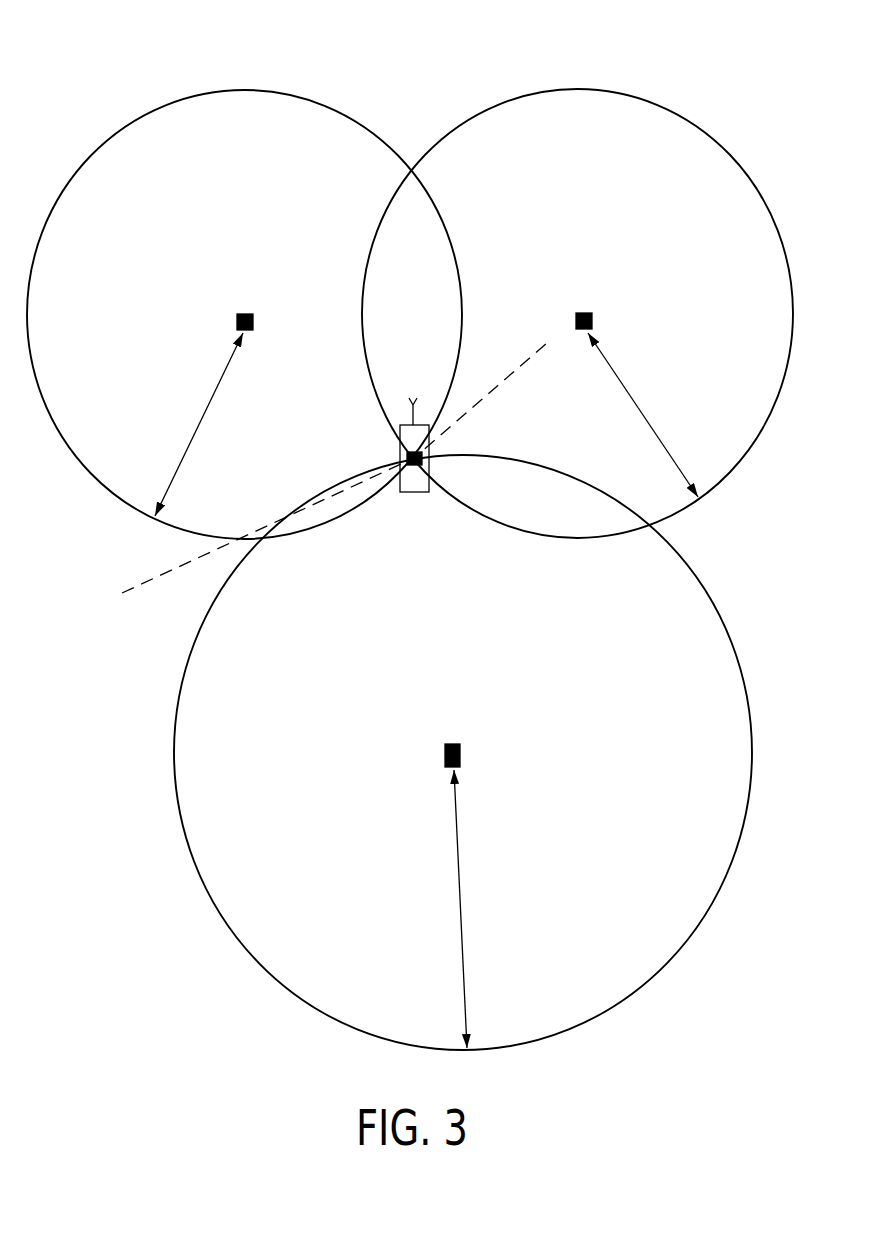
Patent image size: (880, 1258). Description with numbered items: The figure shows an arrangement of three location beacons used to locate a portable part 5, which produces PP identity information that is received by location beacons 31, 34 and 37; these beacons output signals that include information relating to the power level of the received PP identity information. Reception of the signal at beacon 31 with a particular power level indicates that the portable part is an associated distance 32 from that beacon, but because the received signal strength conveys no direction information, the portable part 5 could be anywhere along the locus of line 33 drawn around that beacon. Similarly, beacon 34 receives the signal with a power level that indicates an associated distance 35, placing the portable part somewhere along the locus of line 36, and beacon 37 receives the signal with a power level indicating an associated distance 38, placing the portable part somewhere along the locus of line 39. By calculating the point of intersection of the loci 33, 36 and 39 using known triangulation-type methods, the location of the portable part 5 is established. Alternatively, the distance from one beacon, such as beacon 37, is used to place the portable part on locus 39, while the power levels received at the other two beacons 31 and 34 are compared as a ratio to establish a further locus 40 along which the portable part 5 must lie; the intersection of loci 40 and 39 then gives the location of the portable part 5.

The portable part 5 is at (407, 455).
The location beacon 31 is at (243, 312).
The distance 32 is at (198, 421).
The locus of line 33 is at (243, 90).
The location beacon 34 is at (462, 755).
The distance 35 is at (461, 895).
The locus of line 36 is at (660, 970).
The location beacon 37 is at (583, 312).
The distance 38 is at (633, 397).
The locus of line 39 is at (571, 88).
The locus 40 is at (143, 584).